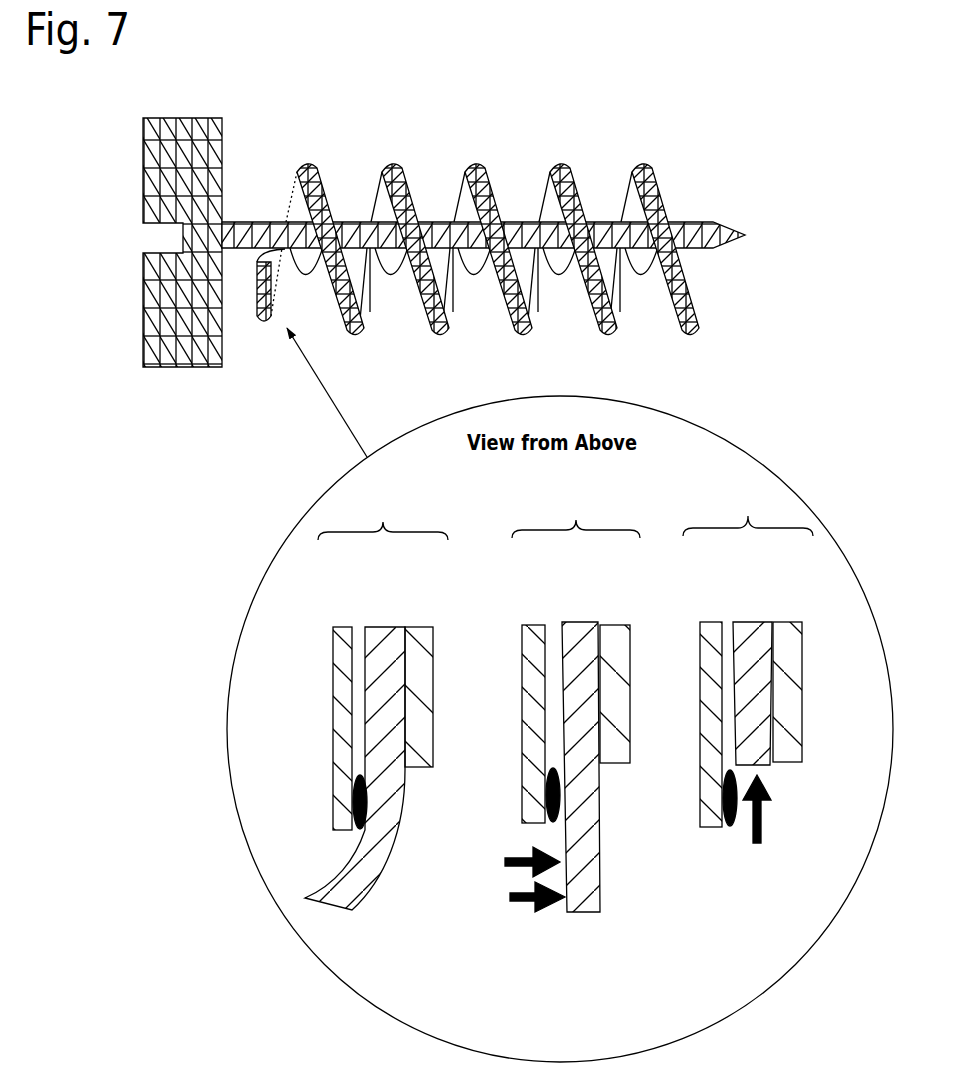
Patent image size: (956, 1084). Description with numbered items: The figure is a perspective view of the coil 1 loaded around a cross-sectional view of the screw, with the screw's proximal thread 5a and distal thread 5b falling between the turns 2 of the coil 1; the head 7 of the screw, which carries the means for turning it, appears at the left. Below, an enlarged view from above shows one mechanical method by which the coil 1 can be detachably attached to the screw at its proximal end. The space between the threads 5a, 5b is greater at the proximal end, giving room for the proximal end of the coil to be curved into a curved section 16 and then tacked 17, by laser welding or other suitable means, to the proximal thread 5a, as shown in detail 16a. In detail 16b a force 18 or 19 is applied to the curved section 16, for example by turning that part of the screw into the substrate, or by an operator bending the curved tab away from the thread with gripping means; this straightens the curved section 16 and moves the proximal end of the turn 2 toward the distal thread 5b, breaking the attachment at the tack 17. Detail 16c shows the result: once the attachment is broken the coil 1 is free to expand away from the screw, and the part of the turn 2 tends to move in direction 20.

The coil 1 is at (707, 287).
The turns of the coil 2 is at (620, 162).
The proximal thread 5a is at (382, 200).
The distal thread 5b is at (467, 288).
The head of the screw 7 is at (233, 170).
The curved section 16 is at (378, 905).
The detail showing the tacked curved section 16a is at (383, 514).
The detail showing the straightening curved section 16b is at (576, 512).
The detail showing the expanded coil 16c is at (748, 509).
The tack 17 is at (350, 805).
The force 18 is at (530, 928).
The force 19 is at (515, 850).
The direction of movement 20 is at (748, 826).